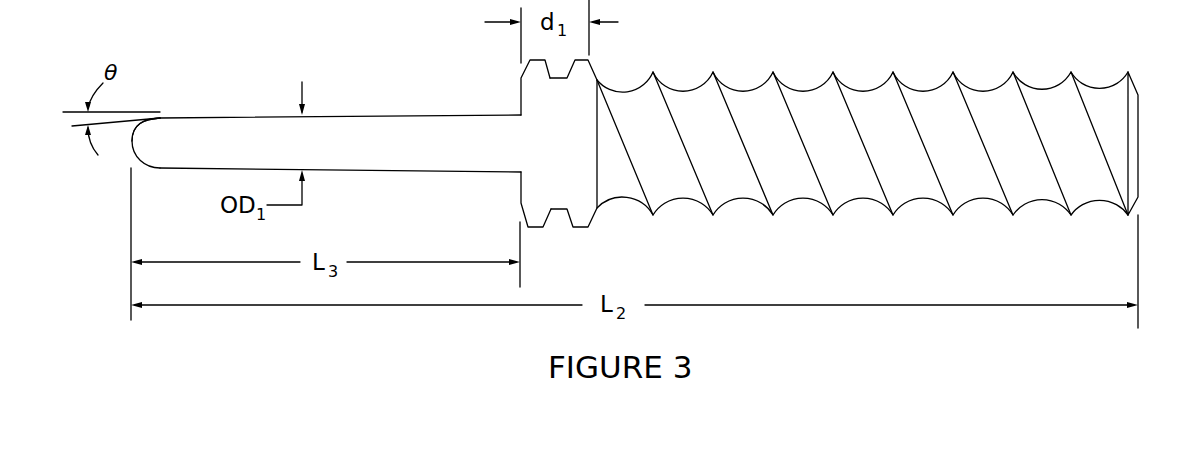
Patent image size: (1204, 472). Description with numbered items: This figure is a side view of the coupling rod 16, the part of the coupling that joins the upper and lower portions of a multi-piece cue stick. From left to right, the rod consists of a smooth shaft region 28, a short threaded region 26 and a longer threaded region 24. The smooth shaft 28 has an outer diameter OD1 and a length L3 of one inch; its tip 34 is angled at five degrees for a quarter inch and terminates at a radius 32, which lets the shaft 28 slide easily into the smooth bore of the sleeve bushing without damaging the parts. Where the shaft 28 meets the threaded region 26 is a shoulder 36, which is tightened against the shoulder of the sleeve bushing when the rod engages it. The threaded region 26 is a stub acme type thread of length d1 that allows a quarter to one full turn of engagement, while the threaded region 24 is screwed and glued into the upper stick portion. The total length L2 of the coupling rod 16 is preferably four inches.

The coupling rod 16 is at (1113, 142).
The threaded region 24 is at (930, 86).
The threaded region 26 is at (580, 212).
The smooth shaft region 28 is at (372, 155).
The radius 32 is at (130, 152).
The tip 34 is at (162, 135).
The shoulder 36 is at (520, 182).